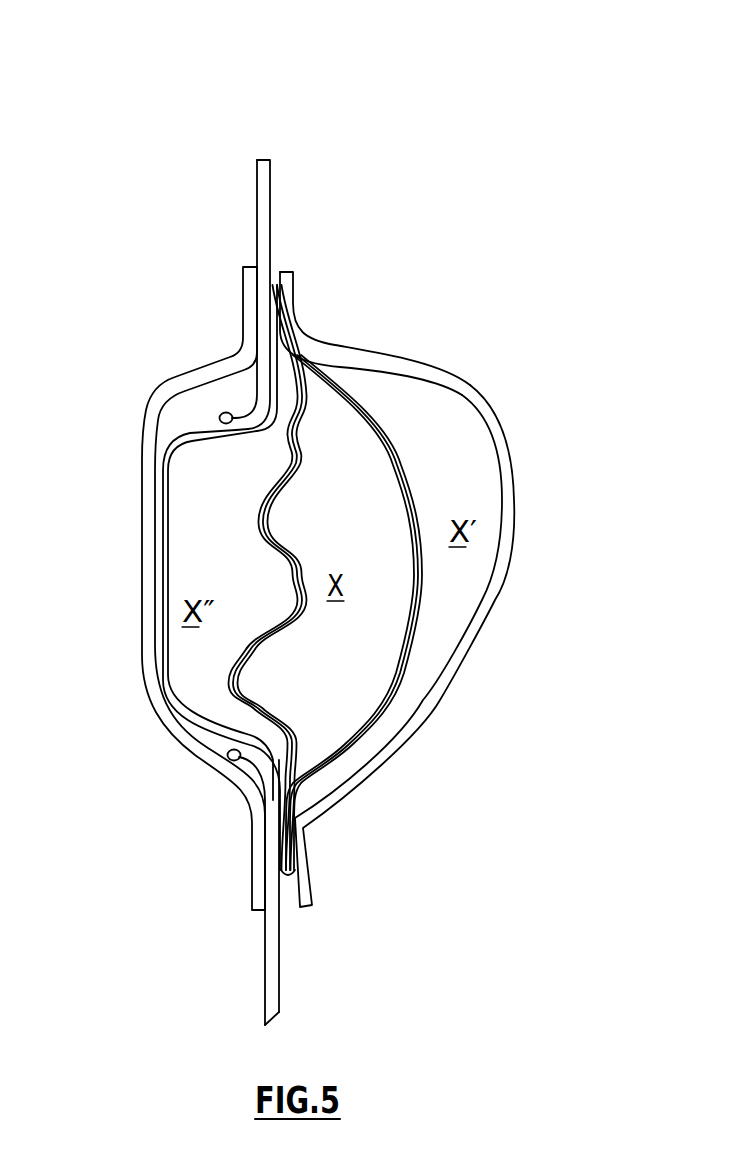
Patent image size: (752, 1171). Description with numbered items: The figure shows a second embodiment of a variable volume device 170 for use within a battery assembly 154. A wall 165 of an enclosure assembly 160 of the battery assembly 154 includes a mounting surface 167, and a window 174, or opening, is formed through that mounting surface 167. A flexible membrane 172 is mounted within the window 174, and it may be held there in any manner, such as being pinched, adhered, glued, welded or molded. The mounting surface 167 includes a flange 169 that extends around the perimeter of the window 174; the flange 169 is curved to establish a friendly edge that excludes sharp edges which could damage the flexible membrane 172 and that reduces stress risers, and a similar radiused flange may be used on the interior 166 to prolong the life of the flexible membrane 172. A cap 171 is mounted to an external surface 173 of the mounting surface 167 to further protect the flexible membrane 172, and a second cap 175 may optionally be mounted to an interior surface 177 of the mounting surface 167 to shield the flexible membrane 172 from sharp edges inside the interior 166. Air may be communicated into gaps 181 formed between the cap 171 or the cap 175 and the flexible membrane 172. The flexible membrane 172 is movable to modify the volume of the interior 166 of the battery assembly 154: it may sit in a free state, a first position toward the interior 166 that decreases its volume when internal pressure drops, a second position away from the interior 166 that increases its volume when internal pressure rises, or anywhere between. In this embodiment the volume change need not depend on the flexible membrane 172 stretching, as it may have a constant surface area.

The battery assembly 154 is at (262, 85).
The enclosure assembly 160 is at (247, 140).
The wall 165 is at (265, 197).
The mounting surface 167 is at (270, 987).
The flange 169 is at (224, 412).
The variable volume device 170 is at (365, 330).
The cap 171 is at (147, 525).
The flexible membrane 172 is at (397, 455).
The external surface 173 is at (265, 950).
The window 174 is at (234, 549).
The second cap 175 is at (512, 500).
The interior surface 177 is at (280, 965).
The gaps 181 is at (397, 378).
The interior 166 is at (606, 604).